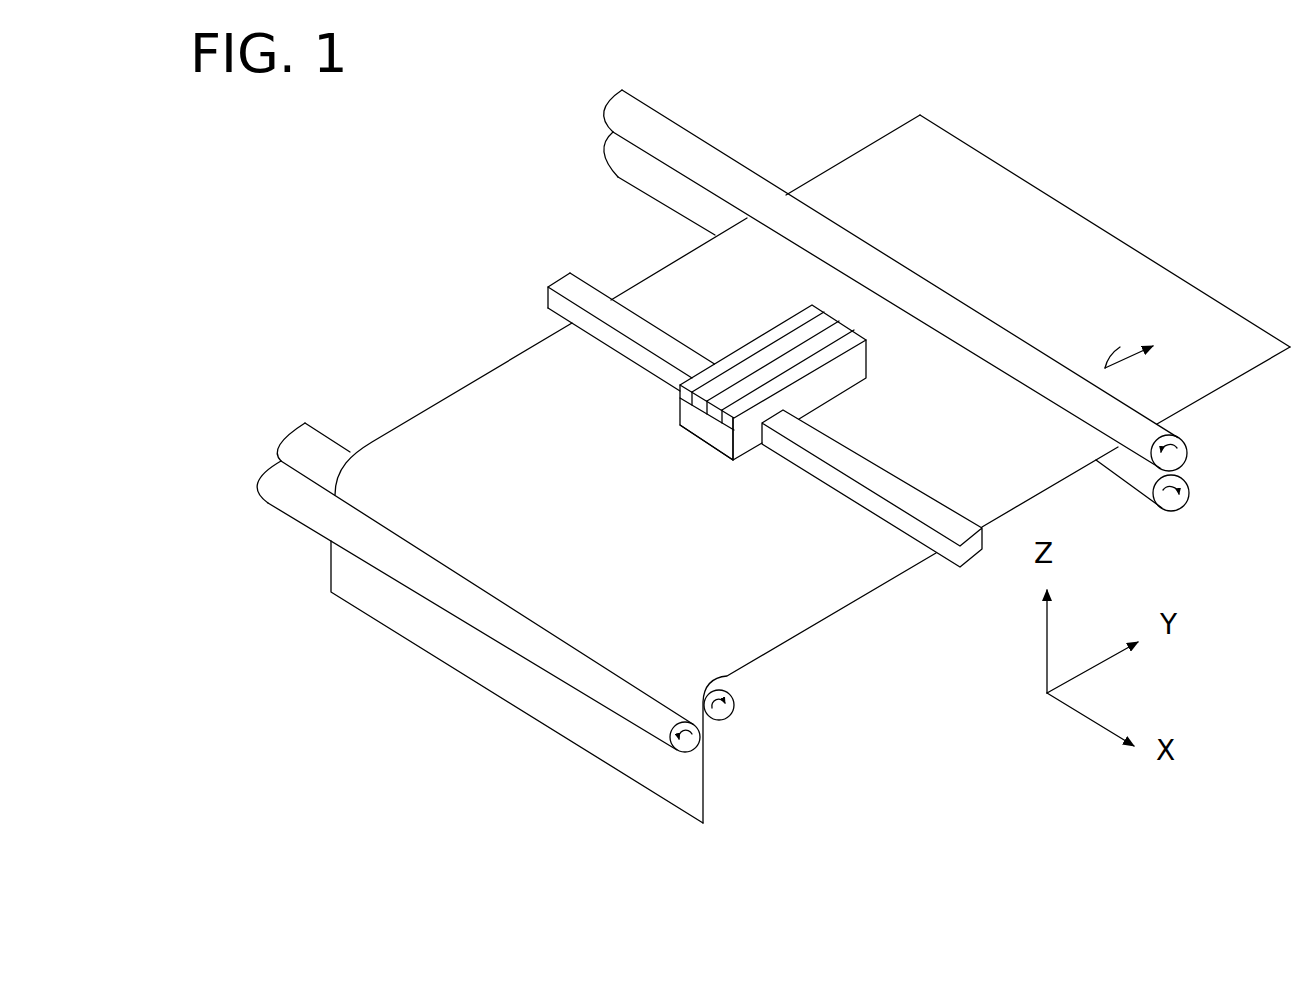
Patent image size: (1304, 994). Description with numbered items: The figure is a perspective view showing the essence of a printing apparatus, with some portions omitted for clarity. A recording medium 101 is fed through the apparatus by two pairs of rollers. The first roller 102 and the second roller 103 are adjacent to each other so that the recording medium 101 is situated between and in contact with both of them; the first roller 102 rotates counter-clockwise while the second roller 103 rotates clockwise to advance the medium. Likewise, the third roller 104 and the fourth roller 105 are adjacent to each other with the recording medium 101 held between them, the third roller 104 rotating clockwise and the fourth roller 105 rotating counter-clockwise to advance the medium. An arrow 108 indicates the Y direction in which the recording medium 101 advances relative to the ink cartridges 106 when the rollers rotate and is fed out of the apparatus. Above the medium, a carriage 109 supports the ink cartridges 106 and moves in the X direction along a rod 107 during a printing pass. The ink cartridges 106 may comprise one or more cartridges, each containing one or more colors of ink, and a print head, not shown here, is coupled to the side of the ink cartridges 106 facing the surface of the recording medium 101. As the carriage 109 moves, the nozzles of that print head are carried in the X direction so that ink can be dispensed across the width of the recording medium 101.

The recording medium 101 is at (987, 178).
The first roller 102 is at (645, 115).
The second roller 103 is at (625, 168).
The third roller 104 is at (316, 447).
The fourth roller 105 is at (275, 493).
The ink cartridges 106 is at (793, 323).
The rod 107 is at (913, 498).
The arrow 108 is at (1134, 340).
The carriage 109 is at (703, 427).